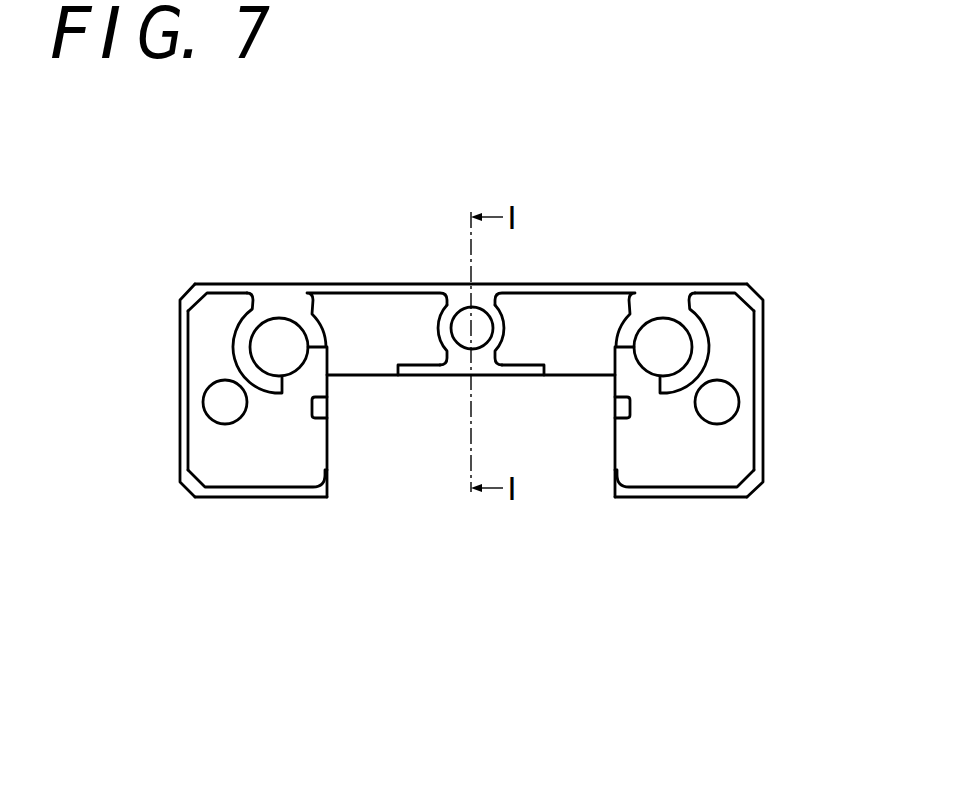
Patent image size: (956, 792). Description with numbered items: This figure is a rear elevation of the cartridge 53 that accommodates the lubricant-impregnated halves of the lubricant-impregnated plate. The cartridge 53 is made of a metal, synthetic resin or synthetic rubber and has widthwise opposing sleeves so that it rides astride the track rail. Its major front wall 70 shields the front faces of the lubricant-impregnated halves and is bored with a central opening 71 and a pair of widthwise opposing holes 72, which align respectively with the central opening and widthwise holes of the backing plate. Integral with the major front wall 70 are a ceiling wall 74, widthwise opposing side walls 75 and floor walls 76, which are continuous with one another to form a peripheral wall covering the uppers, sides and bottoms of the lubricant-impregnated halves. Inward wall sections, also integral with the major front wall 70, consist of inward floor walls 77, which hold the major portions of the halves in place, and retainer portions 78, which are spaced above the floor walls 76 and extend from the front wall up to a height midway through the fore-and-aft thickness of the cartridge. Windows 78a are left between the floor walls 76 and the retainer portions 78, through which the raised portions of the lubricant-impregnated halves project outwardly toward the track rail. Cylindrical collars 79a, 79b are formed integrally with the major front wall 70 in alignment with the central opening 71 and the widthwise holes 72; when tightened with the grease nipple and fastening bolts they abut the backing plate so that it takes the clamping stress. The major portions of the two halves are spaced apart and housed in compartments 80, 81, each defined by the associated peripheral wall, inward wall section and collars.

The cartridge 53 is at (761, 268).
The major front wall 70 is at (353, 330).
The central opening 71 is at (463, 328).
The widthwise opposing holes 72 is at (277, 340).
The ceiling wall 74 is at (367, 285).
The side walls 75 is at (183, 405).
The floor walls 76 is at (262, 490).
The inward floor walls 77 is at (418, 371).
The retainer portions 78 is at (325, 413).
The windows 78a is at (325, 455).
The cylindrical collar 79a is at (503, 328).
The cylindrical collars 79b is at (238, 348).
The compartment 80 is at (248, 469).
The compartment 81 is at (406, 351).